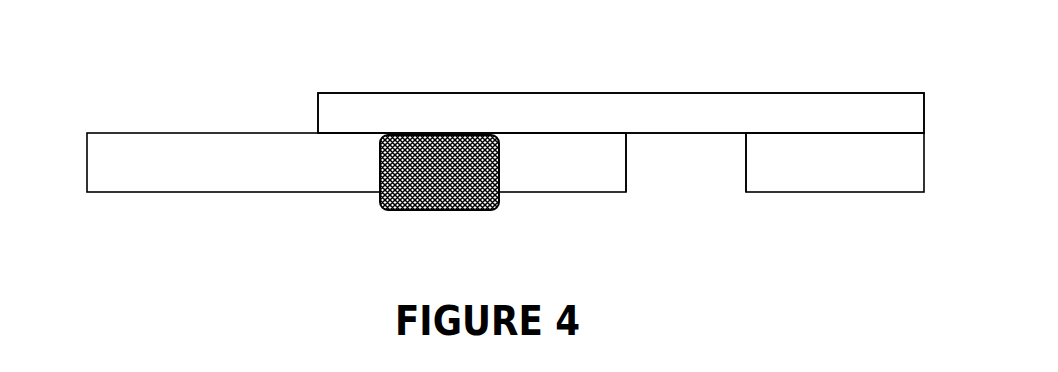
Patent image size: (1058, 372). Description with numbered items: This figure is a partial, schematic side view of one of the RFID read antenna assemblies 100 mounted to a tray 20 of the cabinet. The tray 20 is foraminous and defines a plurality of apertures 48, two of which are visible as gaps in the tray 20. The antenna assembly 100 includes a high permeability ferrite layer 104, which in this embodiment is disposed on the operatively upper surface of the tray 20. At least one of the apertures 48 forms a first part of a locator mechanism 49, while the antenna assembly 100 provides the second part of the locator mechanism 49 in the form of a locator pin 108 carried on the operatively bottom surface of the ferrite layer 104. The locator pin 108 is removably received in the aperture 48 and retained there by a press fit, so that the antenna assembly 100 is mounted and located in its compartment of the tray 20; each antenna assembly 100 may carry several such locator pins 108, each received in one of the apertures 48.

The tray 20 is at (190, 133).
The aperture 48 is at (352, 170).
The locator mechanism 49 is at (515, 210).
The RFID read antenna assembly 100 is at (830, 92).
The ferrite layer 104 is at (608, 93).
The locator pin 108 is at (396, 201).